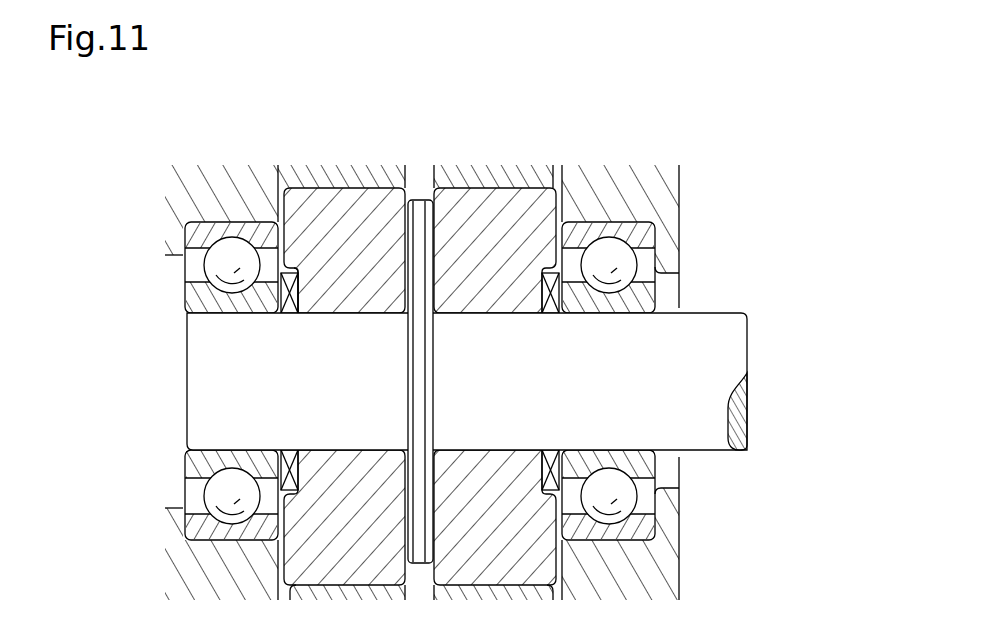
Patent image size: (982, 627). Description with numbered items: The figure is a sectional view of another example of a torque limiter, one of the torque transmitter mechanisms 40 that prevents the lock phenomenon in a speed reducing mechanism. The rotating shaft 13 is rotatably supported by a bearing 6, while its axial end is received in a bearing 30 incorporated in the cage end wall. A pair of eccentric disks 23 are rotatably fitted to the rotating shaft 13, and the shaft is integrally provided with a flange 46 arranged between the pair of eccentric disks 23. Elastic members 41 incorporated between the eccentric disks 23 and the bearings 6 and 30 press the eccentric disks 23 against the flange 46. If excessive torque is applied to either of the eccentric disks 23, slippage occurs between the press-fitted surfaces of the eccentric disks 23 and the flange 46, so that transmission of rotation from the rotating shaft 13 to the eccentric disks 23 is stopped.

The bearing 6 is at (640, 468).
The rotating shaft 13 is at (702, 330).
The eccentric disks 23 is at (348, 197).
The bearing 30 is at (190, 295).
The torque transmitter mechanism 40 is at (300, 322).
The elastic members 41 is at (285, 317).
The flange 46 is at (420, 372).